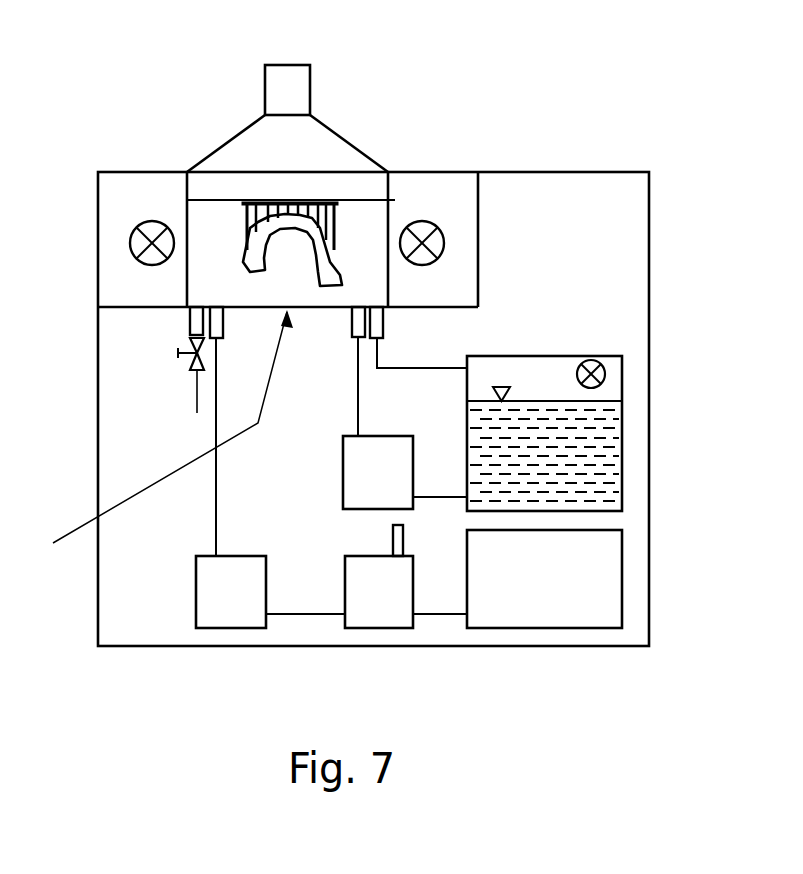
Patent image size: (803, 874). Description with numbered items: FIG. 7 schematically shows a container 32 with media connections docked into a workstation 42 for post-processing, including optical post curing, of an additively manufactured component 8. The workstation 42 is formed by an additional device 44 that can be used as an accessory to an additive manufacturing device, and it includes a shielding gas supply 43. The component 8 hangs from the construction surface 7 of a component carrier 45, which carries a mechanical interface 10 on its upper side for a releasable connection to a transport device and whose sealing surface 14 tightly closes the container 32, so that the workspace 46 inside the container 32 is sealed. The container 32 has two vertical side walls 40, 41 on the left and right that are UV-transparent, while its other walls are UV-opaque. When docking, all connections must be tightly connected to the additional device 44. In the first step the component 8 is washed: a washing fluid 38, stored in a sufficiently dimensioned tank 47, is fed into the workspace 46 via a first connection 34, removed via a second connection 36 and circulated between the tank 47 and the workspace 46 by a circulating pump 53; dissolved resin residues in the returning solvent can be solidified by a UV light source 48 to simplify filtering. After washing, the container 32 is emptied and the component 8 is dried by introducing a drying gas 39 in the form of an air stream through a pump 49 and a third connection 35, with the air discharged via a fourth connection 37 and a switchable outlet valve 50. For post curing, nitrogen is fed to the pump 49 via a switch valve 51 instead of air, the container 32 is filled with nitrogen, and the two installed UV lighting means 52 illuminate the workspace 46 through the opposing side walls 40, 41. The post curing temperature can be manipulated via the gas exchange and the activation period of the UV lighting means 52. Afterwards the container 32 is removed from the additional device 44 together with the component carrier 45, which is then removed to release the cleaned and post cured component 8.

The construction surface 7 is at (268, 193).
The component 8 is at (313, 232).
The mechanical interface 10 is at (290, 88).
The sealing surface 14 is at (393, 220).
The container 32 is at (390, 287).
The first connection 34 is at (385, 329).
The third connection 35 is at (200, 324).
The second connection 36 is at (385, 325).
The fourth connection 37 is at (190, 332).
The washing fluid 38 is at (543, 456).
The drying gas 39 is at (398, 542).
The side wall 40 is at (186, 216).
The side wall 41 is at (422, 233).
The workstation 42 is at (159, 438).
The shielding gas supply 43 is at (317, 614).
The additional device 44 is at (650, 199).
The component carrier 45 is at (210, 187).
The workspace 46 is at (360, 235).
The tank 47 is at (577, 443).
The UV light source 48 is at (605, 374).
The pump 49 is at (235, 592).
The switchable outlet valve 50 is at (192, 360).
The switch valve 51 is at (364, 586).
The UV lighting means 52 is at (130, 243).
The circulating pump 53 is at (413, 471).